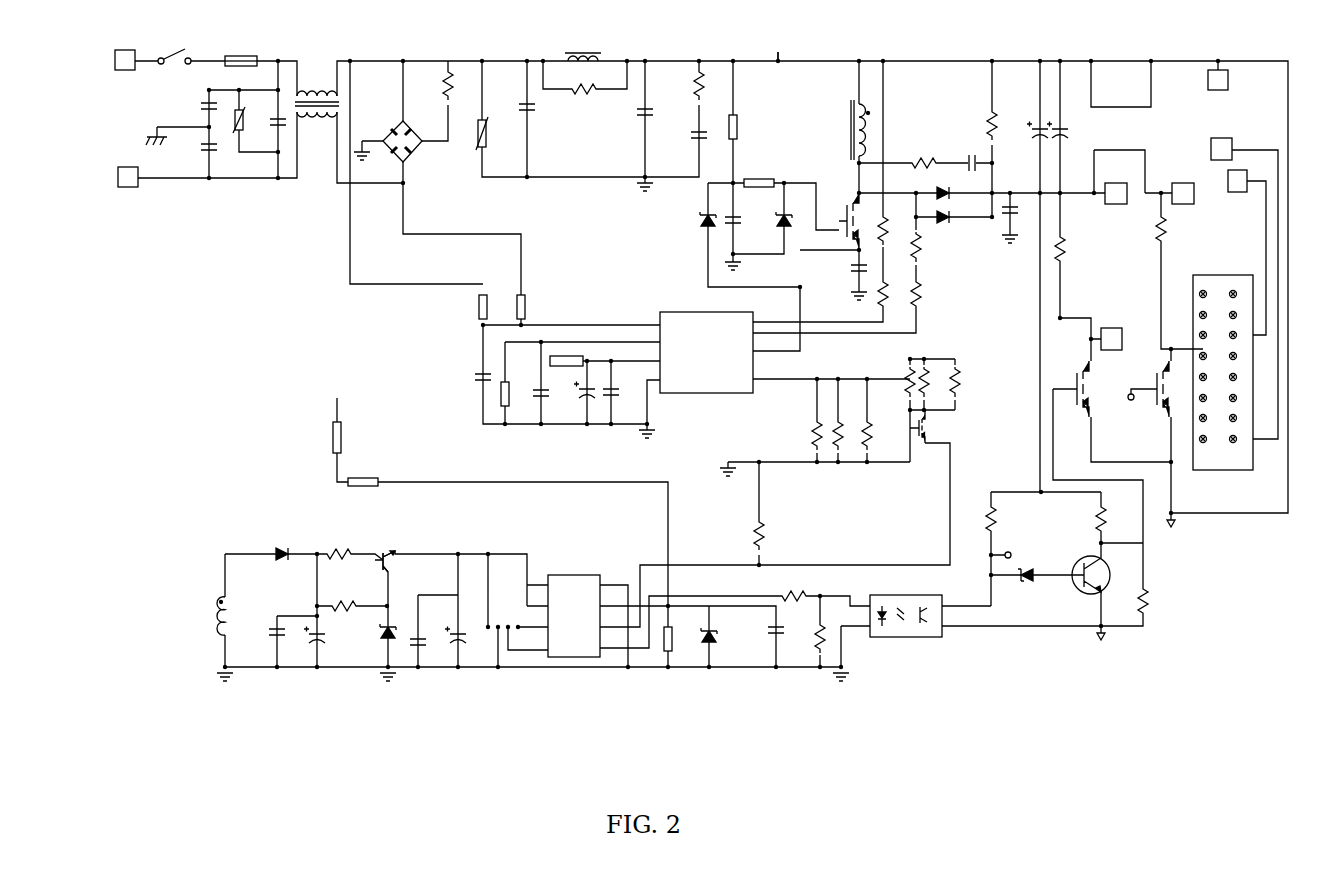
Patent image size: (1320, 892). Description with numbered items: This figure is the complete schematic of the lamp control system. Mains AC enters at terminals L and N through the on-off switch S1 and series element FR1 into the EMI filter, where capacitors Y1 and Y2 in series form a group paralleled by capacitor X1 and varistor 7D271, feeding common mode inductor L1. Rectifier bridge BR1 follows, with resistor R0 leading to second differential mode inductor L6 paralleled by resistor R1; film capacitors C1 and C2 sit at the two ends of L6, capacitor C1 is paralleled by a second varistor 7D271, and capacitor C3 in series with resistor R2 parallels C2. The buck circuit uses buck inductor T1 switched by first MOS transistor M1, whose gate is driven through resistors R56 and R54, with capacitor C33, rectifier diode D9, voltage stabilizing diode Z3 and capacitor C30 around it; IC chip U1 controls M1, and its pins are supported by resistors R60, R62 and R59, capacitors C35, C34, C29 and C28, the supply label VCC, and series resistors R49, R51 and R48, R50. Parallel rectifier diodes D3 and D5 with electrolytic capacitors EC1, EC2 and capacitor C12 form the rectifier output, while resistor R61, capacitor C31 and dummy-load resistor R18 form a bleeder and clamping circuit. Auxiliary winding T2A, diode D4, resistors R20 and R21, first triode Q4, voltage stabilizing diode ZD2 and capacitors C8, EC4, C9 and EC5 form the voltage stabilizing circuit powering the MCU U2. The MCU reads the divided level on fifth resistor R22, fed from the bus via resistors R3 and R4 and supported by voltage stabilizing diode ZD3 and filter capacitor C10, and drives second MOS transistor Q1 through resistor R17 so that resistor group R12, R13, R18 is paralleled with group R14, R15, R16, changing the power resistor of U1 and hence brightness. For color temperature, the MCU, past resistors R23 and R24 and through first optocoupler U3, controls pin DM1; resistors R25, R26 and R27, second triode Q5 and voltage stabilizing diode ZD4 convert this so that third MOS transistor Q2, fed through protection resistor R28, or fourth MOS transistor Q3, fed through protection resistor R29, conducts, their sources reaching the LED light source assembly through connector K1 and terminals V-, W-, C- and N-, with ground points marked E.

The line input terminal L is at (125, 53).
The neutral input terminal N is at (128, 170).
The switch S1 is at (174, 50).
The fuse resistor FR1 is at (240, 54).
The first capacitor Y1 is at (201, 106).
The second capacitor Y2 is at (201, 147).
The third capacitor X1 is at (274, 115).
The varistor 7D271 is at (378, 128).
The common mode inductor L1 is at (317, 96).
The rectifier bridge BR1 is at (412, 141).
The resistor R0 is at (441, 85).
The first film capacitor C1 is at (533, 101).
The second differential mode inductor L6 is at (576, 54).
The resistor R1 is at (585, 95).
The second film capacitor C2 is at (638, 112).
The resistor R2 is at (693, 85).
The film capacitor C3 is at (692, 136).
The second resistor R56 is at (744, 127).
The first resistor R54 is at (759, 179).
The first rectifier diode D9 is at (703, 227).
The fourth capacitor C33 is at (744, 220).
The first voltage stabilizing diode Z3 is at (795, 220).
The buck inductor T1 is at (850, 130).
The first MOS transistor M1 is at (842, 215).
The capacitor C30 is at (847, 268).
The resistor R61 is at (924, 157).
The capacitor C31 is at (969, 156).
The resistor R18 is at (973, 253).
The second rectifier diode D3 is at (951, 187).
The third rectifier diode D5 is at (951, 213).
The resistor R51 is at (896, 230).
The resistor R48 is at (927, 247).
The resistor R49 is at (896, 295).
The resistor R50 is at (929, 295).
The first electrolytic capacitor EC1 is at (1030, 128).
The second electrolytic capacitor EC2 is at (1068, 128).
The capacitor C12 is at (1021, 211).
The first protection resistor R28 is at (1072, 250).
The second protection resistor R29 is at (1151, 230).
The terminal V- is at (1218, 85).
The terminal W- is at (1221, 144).
The terminal C- is at (1237, 186).
The terminal N- is at (1111, 334).
The connector K1 is at (1223, 365).
The third MOS transistor Q2 is at (1088, 389).
The fourth MOS transistor Q3 is at (1168, 389).
The pin DM1 is at (1074, 478).
The eighth resistor R25 is at (1004, 520).
The sixth resistor R26 is at (1114, 520).
The seventh resistor R27 is at (1155, 602).
The third voltage stabilizing diode ZD4 is at (1031, 583).
The second triode Q5 is at (1081, 575).
The ground terminal E is at (1138, 583).
The first optocoupler U3 is at (906, 609).
The resistor R23 is at (795, 590).
The resistor R24 is at (829, 634).
The capacitor C10 is at (785, 625).
The voltage stabilizing diode ZD3 is at (702, 642).
The fifth resistor R22 is at (678, 631).
The resistor R17 is at (769, 535).
The microcontroller FT60F011A U2 is at (574, 611).
The IC chip U1 is at (703, 345).
The resistor R60 is at (474, 307).
The resistor R62 is at (510, 307).
The capacitor C35 is at (472, 377).
The resistor R59 is at (496, 398).
The capacitor C34 is at (533, 387).
The supply net label VCC is at (566, 361).
The electrolytic capacitor C29 is at (580, 399).
The capacitor C28 is at (620, 403).
The resistor R12 is at (902, 381).
The resistor R13 is at (936, 381).
The resistor R14 is at (809, 434).
The resistor R15 is at (850, 434).
The resistor R16 is at (878, 435).
The second MOS transistor Q1 is at (930, 428).
The resistor R3 is at (330, 437).
The resistor R4 is at (363, 474).
The inductor auxiliary winding T2A is at (206, 618).
The fourth rectifier diode D4 is at (278, 562).
The third resistor R20 is at (340, 548).
The first triode Q4 is at (389, 554).
The fourth resistor R21 is at (345, 599).
The second voltage stabilizing diode ZD2 is at (377, 638).
The first capacitor C8 is at (266, 630).
The third electrolytic capacitor EC4 is at (309, 641).
The second capacitor C9 is at (423, 633).
The fourth electrolytic capacitor EC5 is at (464, 641).